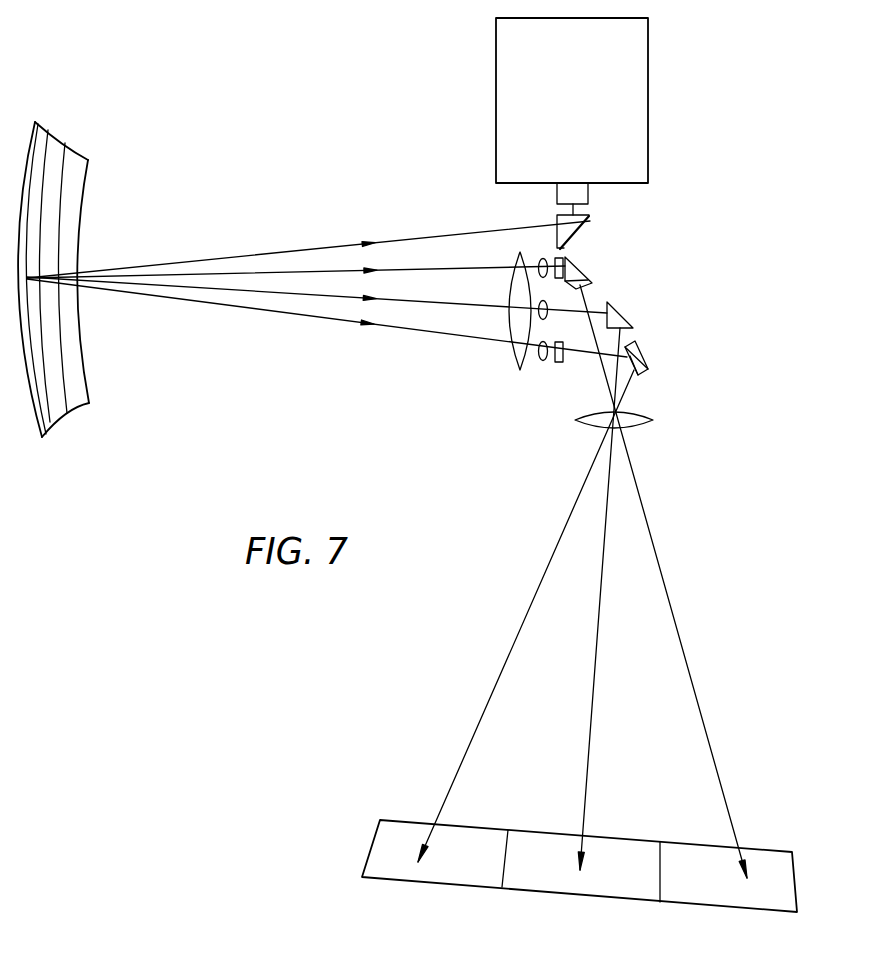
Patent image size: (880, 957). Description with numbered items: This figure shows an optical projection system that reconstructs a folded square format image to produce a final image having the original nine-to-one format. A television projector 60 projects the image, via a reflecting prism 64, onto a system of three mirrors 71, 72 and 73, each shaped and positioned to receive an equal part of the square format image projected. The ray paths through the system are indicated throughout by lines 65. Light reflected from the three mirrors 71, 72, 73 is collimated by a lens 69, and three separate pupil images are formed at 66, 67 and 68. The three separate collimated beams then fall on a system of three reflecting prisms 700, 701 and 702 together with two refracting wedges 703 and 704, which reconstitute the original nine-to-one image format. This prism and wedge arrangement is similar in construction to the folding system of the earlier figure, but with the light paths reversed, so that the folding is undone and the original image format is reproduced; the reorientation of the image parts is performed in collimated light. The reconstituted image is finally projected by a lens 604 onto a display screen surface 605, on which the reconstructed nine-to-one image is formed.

The television projector 60 is at (578, 115).
The reflecting prism 64 is at (596, 218).
The lines indicating ray paths 65 is at (348, 270).
The pupil image 66 is at (540, 361).
The pupil image 67 is at (548, 313).
The pupil image 68 is at (542, 258).
The lens 69 is at (512, 352).
The mirror 71 is at (42, 132).
The mirror 72 is at (58, 150).
The mirror 73 is at (78, 158).
The reflecting prism 700 is at (633, 348).
The reflecting prism 701 is at (618, 306).
The reflecting prism 702 is at (572, 259).
The refracting wedge 703 is at (563, 363).
The refracting wedge 704 is at (560, 250).
The lens 604 is at (640, 416).
The display screen surface 605 is at (377, 833).